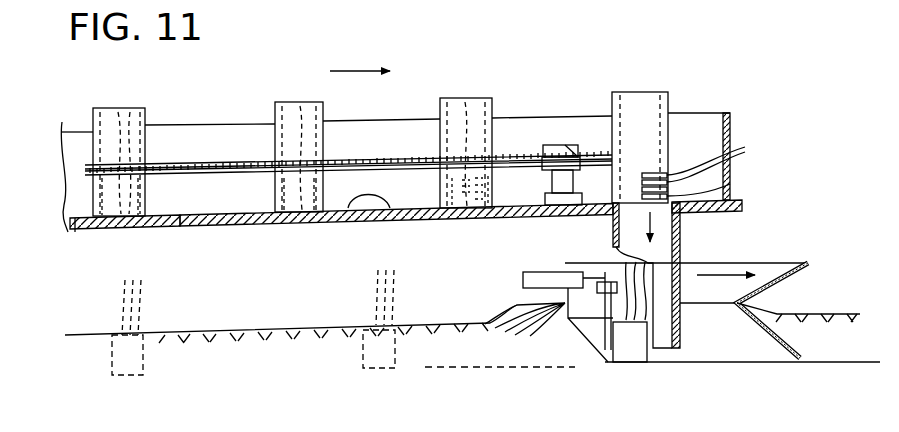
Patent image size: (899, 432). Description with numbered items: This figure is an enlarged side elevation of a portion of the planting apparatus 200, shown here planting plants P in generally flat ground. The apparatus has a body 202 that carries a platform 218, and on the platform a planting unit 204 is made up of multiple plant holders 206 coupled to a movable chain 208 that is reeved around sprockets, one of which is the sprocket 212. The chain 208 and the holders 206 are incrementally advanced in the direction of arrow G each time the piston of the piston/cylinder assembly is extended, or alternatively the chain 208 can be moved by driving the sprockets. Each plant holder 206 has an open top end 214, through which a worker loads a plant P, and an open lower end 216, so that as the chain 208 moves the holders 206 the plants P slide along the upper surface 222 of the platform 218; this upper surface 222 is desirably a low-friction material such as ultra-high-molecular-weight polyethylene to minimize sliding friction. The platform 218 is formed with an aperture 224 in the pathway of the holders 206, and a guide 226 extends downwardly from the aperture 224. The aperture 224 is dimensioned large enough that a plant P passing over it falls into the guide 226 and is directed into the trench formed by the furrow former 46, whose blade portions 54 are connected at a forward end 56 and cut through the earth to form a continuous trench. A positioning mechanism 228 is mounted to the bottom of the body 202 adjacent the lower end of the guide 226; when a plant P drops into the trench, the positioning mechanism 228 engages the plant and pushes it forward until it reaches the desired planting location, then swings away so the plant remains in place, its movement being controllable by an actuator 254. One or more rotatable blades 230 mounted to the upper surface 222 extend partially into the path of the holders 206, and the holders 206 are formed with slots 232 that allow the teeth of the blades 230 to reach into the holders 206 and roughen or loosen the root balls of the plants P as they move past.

The planting apparatus 200 is at (670, 75).
The body 202 is at (742, 203).
The planting unit 204 is at (303, 78).
The plant holder 206 is at (419, 113).
The chain 208 is at (444, 236).
The sprocket 212 is at (574, 145).
The open top end 214 is at (112, 108).
The open lower end 216 is at (75, 232).
The platform 218 is at (255, 224).
The upper surface 222 is at (380, 200).
The aperture 224 is at (730, 184).
The guide 226 is at (680, 238).
The positioning mechanism 228 is at (610, 340).
The rotatable blade 230 is at (470, 207).
The slot 232 is at (730, 159).
The actuator 254 is at (550, 282).
The blade portion 54 is at (723, 338).
The furrow former 46 is at (757, 343).
The forward end 56 is at (820, 330).
The direction of chain advance G is at (352, 70).
The plant P is at (95, 199).